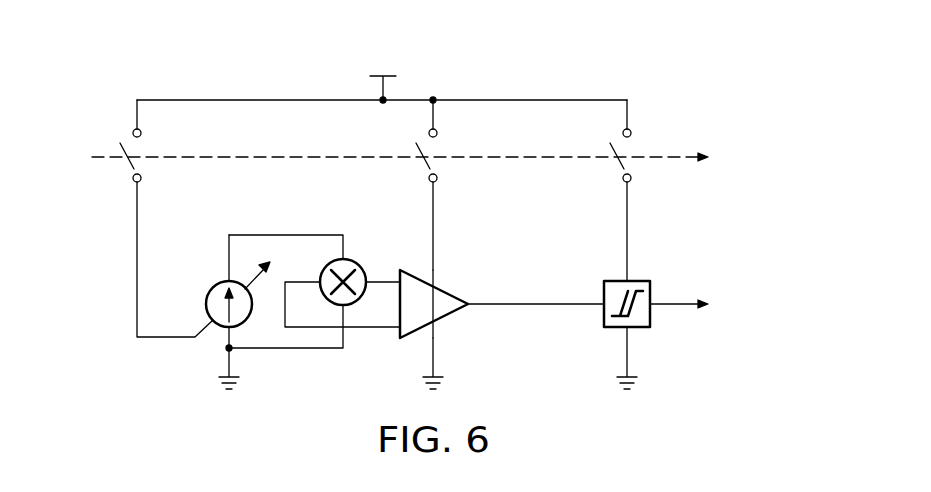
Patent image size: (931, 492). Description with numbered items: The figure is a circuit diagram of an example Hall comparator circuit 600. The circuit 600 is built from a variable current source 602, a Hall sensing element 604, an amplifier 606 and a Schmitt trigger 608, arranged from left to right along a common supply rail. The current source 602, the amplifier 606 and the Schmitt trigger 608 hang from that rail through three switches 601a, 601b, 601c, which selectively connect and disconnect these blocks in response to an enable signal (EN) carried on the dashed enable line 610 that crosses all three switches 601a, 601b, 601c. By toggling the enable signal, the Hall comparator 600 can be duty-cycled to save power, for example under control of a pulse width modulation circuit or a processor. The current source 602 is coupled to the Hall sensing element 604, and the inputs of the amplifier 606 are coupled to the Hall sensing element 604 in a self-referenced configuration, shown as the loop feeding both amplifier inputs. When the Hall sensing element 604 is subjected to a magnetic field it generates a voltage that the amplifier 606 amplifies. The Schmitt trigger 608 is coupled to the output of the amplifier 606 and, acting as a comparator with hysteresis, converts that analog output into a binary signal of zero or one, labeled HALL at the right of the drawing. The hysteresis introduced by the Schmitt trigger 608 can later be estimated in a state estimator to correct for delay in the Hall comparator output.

The Hall comparator circuit 600 is at (217, 54).
The switch 601a is at (128, 166).
The switch 601b is at (423, 167).
The switch 601c is at (615, 165).
The variable current source 602 is at (215, 285).
The Hall sensing element 604 is at (358, 262).
The amplifier 606 is at (448, 312).
The Schmitt trigger 608 is at (650, 320).
The enable signal line 610 is at (651, 133).